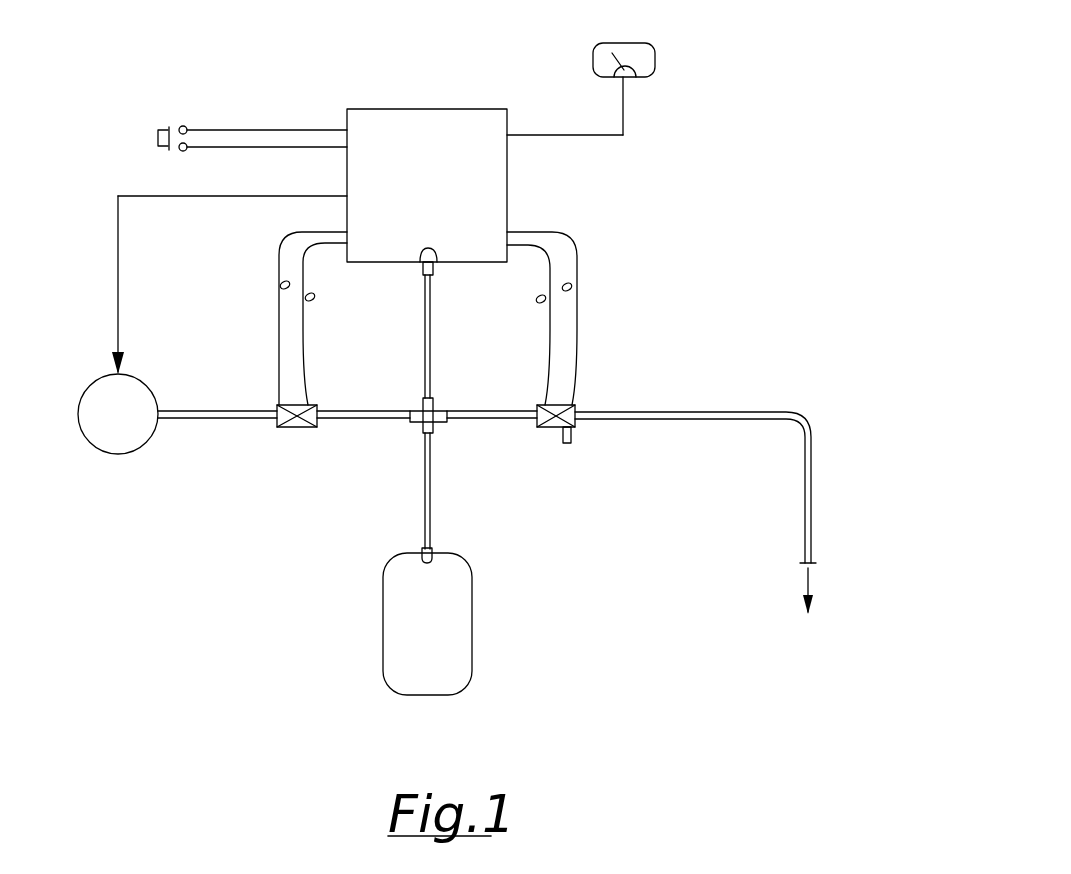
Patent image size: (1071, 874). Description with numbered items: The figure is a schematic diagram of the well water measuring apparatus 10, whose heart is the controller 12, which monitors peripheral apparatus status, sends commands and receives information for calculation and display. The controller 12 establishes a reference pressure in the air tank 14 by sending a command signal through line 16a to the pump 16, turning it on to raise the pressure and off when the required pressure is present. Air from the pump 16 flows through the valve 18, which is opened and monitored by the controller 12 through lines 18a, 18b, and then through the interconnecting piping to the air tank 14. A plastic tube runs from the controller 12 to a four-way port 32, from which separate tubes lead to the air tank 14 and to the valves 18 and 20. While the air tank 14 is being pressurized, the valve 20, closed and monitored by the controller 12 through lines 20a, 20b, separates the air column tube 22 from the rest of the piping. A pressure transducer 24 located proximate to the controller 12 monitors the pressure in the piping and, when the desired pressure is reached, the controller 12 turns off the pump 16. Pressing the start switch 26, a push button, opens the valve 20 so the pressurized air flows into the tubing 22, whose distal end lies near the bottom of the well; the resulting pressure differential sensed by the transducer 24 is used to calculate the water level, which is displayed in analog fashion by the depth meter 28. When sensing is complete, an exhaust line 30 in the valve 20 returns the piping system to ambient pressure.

The well water measuring apparatus 10 is at (660, 195).
The controller 12 is at (403, 117).
The air tank 14 is at (465, 657).
The pump 16 is at (93, 437).
The line 16a is at (117, 252).
The valve 18 is at (295, 428).
The line 18a is at (277, 322).
The line 18b is at (303, 323).
The valve 20 is at (548, 428).
The line 20a is at (550, 323).
The line 20b is at (578, 335).
The air column tube 22 is at (807, 520).
The pressure transducer 24 is at (420, 257).
The start switch 26 is at (177, 127).
The depth meter 28 is at (645, 53).
The exhaust line 30 is at (571, 437).
The 4-way port 32 is at (412, 420).